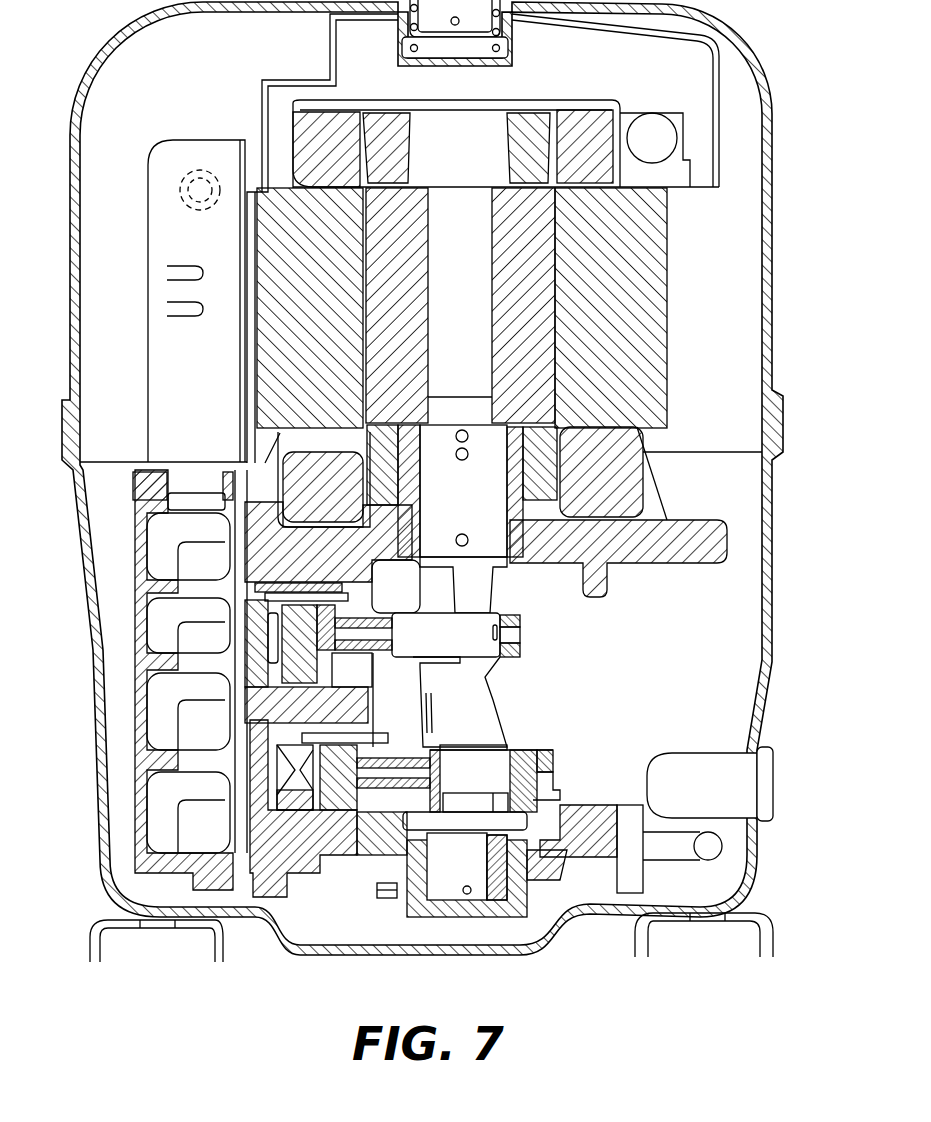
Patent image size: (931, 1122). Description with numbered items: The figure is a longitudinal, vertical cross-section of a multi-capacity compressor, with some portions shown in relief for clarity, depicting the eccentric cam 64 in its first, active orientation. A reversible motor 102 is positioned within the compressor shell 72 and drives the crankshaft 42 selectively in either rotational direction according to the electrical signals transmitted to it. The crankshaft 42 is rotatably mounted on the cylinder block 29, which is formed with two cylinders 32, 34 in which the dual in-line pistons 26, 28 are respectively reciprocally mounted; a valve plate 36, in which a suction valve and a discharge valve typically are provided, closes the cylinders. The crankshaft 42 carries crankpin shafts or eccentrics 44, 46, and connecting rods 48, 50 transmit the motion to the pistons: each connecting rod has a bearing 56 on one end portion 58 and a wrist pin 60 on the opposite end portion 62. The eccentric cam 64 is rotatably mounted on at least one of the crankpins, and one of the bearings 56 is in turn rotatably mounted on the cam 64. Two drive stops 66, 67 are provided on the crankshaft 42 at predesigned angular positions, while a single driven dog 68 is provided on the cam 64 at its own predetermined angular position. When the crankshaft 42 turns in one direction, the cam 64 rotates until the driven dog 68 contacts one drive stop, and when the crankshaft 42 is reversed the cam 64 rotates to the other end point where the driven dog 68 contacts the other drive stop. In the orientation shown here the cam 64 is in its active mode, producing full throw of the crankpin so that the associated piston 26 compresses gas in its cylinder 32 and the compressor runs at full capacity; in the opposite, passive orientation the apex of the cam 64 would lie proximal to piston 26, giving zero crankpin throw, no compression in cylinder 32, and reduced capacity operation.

The compressor shell 72 is at (778, 210).
The reversible motor 102 is at (684, 291).
The piston 26 is at (307, 877).
The piston 28 is at (247, 683).
The cylinder block 29 is at (238, 567).
The cylinder 32 is at (272, 817).
The cylinder 34 is at (255, 605).
The valve plate 36 is at (240, 785).
The crankshaft 42 is at (493, 695).
The crankpin shaft or eccentric 44 is at (510, 735).
The crankpin shaft or eccentric 46 is at (480, 626).
The connecting rod 48 is at (403, 750).
The connecting rod 50 is at (370, 603).
The bearing 56 is at (503, 657).
The end portion 58 is at (503, 618).
The wrist pin 60 is at (280, 672).
The end portion 62 is at (275, 636).
The eccentric cam 64 is at (525, 750).
The drive stop 66 is at (408, 830).
The drive stop 67 is at (507, 797).
The driven dog 68 is at (540, 800).